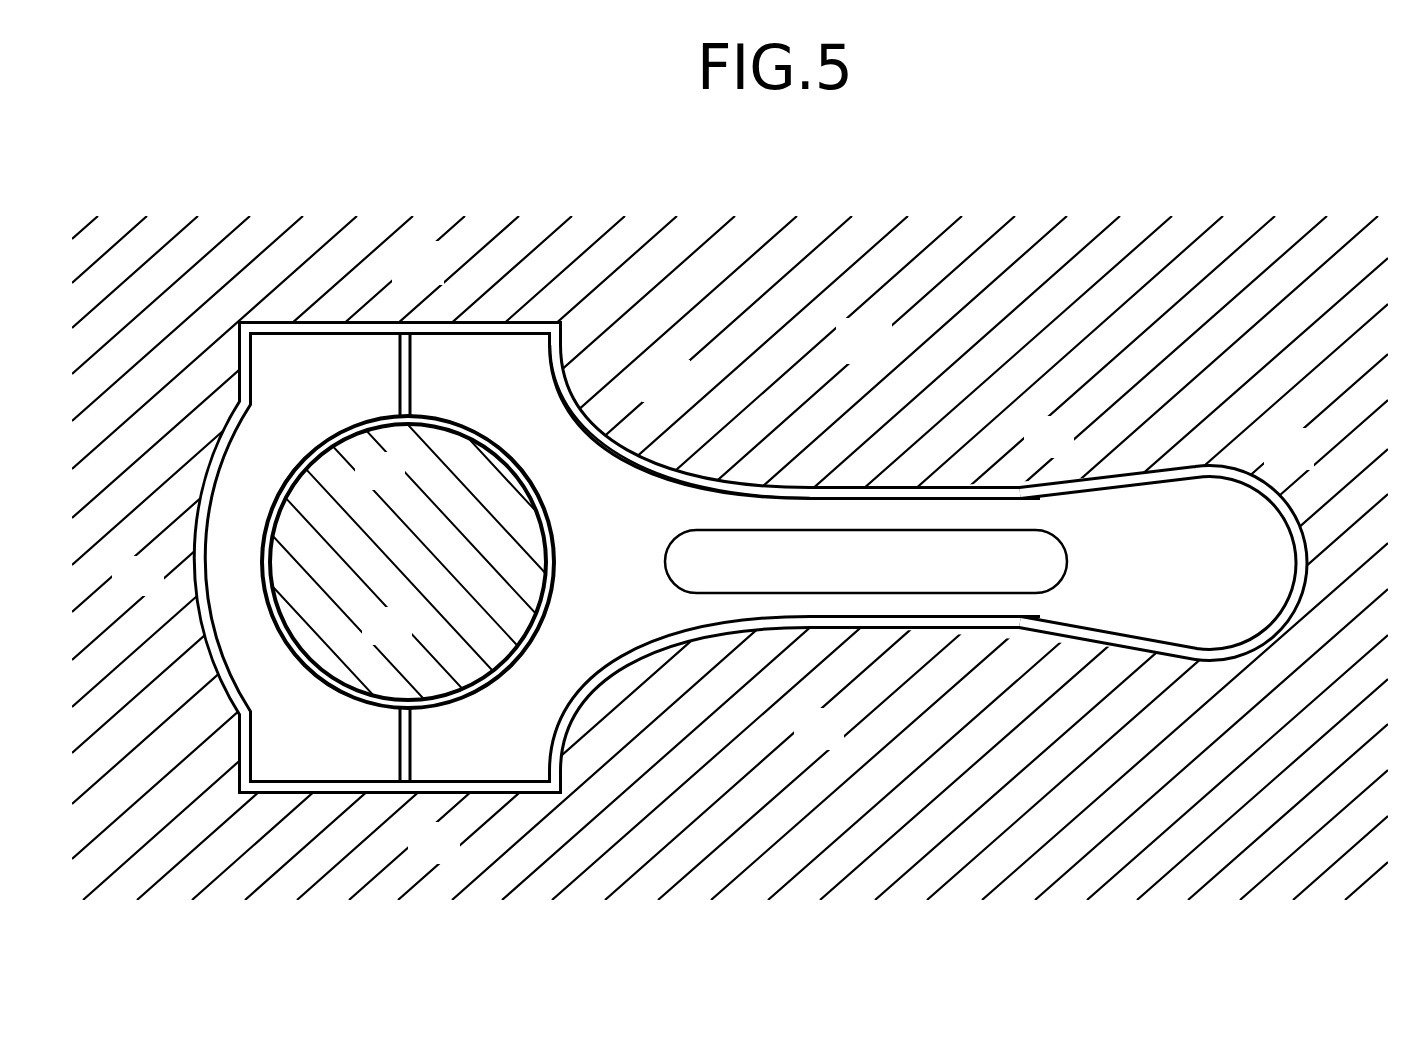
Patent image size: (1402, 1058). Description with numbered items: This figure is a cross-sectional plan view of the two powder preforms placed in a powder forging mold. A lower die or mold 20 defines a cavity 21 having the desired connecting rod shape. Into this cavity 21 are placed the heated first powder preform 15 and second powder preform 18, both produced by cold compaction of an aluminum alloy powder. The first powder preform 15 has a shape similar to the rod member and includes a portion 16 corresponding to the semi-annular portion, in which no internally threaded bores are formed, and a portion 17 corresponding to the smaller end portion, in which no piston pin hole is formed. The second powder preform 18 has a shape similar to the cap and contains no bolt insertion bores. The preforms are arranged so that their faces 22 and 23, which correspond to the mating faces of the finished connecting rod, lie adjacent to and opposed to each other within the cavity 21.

The first powder preform 15 is at (806, 636).
The portion corresponding to the semi-annular portion 16 is at (607, 460).
The portion corresponding to the smaller end portion 17 is at (1236, 511).
The second powder preform 18 is at (222, 580).
The lower die or mold 20 is at (888, 360).
The cavity 21 is at (1086, 490).
The face of the first powder preform 22 is at (402, 372).
The face of the second powder preform 23 is at (407, 393).